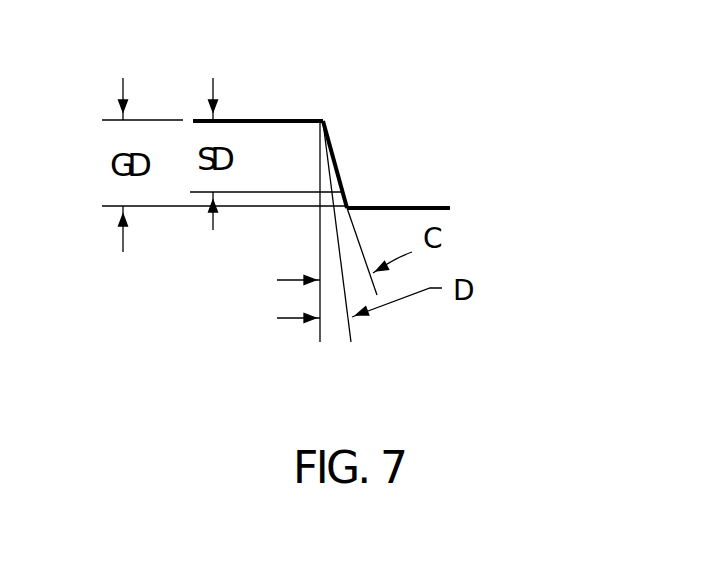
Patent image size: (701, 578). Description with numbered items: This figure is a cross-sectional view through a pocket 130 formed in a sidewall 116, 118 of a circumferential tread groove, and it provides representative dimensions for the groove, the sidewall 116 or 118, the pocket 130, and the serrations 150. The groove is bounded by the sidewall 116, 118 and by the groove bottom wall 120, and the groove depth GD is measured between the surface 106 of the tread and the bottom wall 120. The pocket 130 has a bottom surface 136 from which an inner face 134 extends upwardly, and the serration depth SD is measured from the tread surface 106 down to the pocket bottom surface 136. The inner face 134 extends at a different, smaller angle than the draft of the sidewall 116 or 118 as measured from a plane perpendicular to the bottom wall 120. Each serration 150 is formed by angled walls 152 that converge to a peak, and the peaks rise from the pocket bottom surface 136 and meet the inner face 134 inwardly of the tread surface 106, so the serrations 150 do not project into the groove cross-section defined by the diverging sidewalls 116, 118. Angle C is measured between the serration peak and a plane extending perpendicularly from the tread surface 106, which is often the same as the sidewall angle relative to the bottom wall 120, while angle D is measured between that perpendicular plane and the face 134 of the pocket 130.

The surface of the tread 106 is at (262, 120).
The first sidewall 116 is at (323, 124).
The second sidewall 118 is at (370, 127).
The groove bottom wall 120 is at (440, 205).
The pocket 130 is at (385, 102).
The serration 150 is at (342, 155).
The inner face 134 is at (338, 173).
The angled wall 152 is at (343, 183).
The bottom surface of the pocket 136 is at (337, 182).